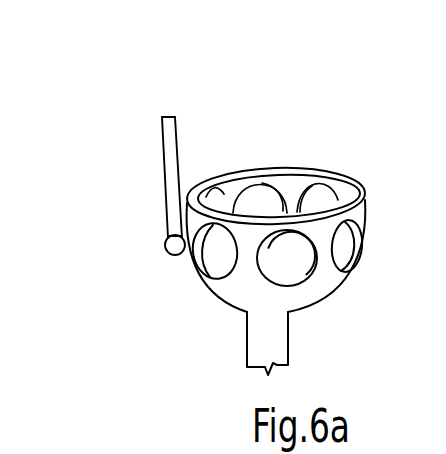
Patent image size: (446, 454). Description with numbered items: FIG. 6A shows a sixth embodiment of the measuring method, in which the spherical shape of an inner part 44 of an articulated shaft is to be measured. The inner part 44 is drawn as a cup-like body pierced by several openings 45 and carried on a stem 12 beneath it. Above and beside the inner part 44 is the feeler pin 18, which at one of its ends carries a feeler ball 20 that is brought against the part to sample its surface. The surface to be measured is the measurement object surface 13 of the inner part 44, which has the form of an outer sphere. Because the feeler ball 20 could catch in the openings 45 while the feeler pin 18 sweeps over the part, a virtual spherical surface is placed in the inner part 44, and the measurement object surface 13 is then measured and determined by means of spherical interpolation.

The feeler pin 18 is at (165, 143).
The feeler ball 20 is at (178, 241).
The inner part of an articulated shaft 44 is at (361, 213).
The measurement object surface 13 is at (243, 283).
The openings 45 is at (278, 262).
The stem 12 is at (272, 338).